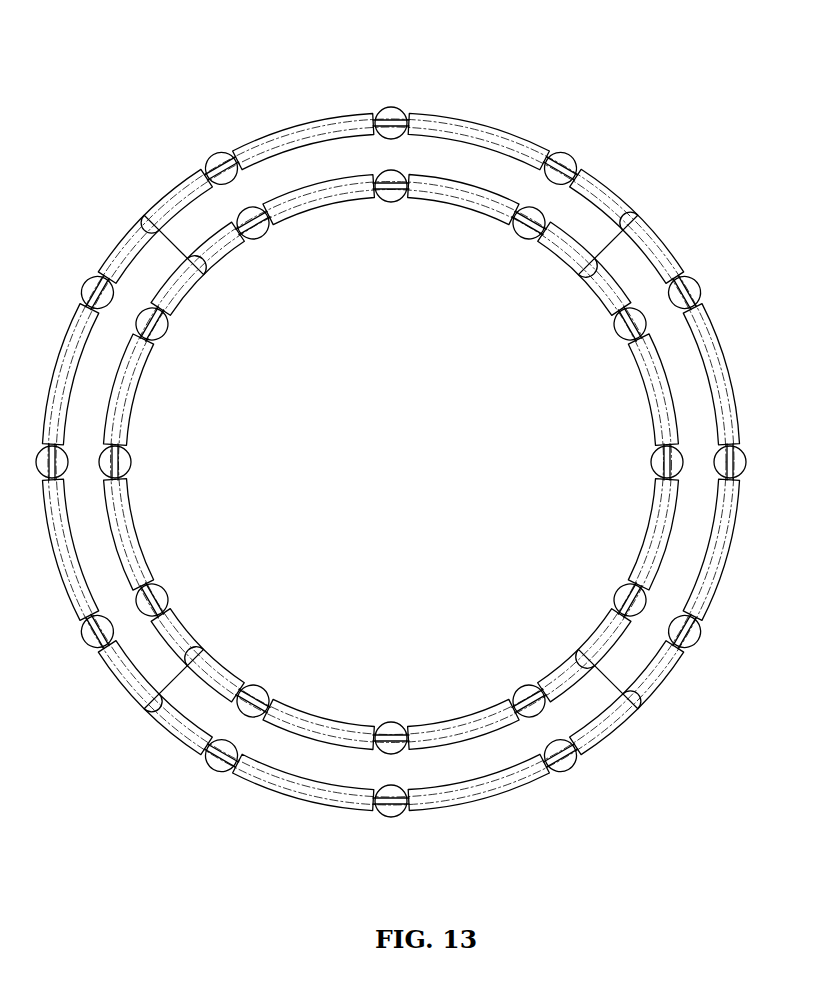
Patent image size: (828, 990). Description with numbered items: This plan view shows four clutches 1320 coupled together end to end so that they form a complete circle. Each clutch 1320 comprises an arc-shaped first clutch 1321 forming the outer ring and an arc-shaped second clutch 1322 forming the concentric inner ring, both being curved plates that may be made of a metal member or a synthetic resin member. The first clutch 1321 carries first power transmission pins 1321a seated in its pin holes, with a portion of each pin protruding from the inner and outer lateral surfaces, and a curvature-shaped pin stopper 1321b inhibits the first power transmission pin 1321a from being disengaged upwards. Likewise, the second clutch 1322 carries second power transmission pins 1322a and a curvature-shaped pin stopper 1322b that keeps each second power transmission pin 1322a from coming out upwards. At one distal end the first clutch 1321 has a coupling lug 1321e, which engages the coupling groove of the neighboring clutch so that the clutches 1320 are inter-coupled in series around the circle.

The clutch 1320 is at (396, 430).
The first clutch 1321 is at (391, 430).
The first power transmission pin 1321a is at (595, 140).
The pin stopper 1321b is at (649, 226).
The coupling lug 1321e is at (467, 118).
The second clutch 1322 is at (391, 462).
The second power transmission pin 1322a is at (535, 261).
The pin stopper 1322b is at (383, 222).